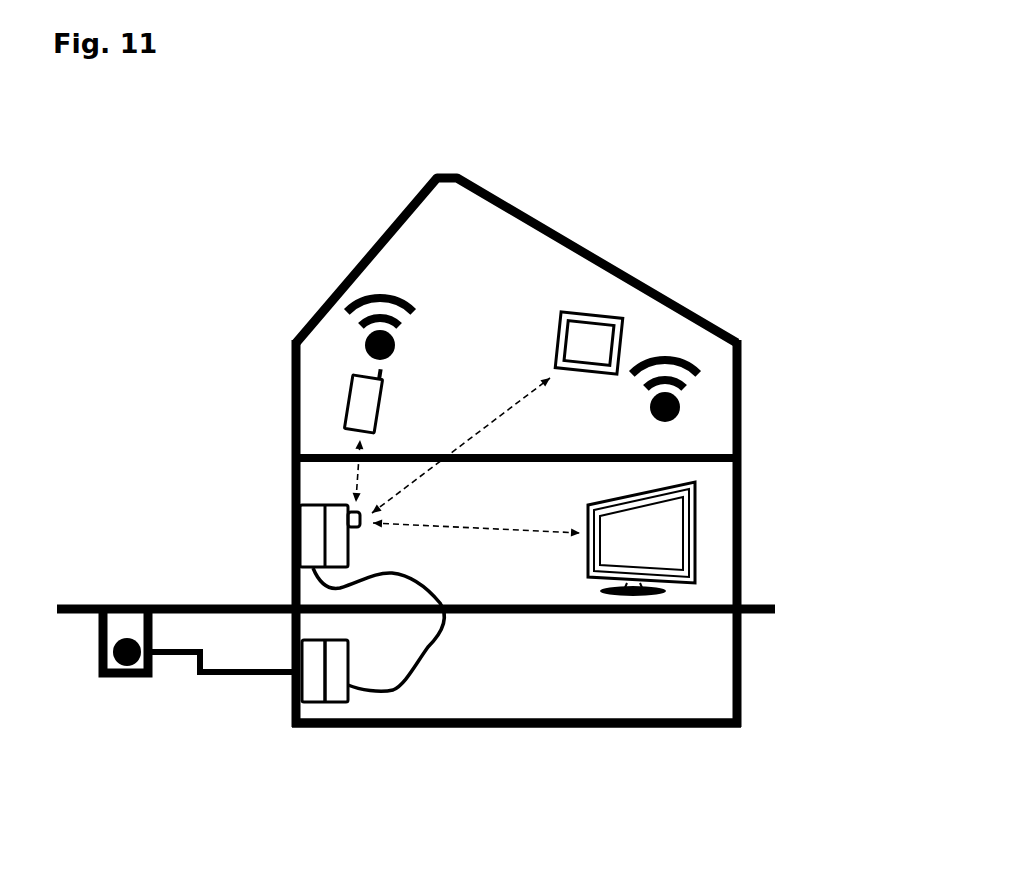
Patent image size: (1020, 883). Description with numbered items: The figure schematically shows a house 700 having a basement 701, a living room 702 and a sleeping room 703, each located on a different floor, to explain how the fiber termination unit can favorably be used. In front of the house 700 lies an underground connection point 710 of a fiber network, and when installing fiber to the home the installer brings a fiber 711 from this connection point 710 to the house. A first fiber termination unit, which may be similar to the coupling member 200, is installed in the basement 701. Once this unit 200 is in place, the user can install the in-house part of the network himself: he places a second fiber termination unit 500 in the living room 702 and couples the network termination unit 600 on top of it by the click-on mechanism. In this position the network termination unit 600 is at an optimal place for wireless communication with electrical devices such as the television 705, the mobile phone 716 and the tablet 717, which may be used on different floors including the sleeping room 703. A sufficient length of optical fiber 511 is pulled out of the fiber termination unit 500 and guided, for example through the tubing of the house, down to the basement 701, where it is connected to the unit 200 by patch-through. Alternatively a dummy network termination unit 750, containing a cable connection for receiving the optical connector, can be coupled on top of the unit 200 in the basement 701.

The house 700 is at (632, 200).
The basement 701 is at (510, 710).
The living room 702 is at (510, 590).
The sleeping room 703 is at (510, 372).
The television 705 is at (587, 557).
The connection point 710 is at (127, 638).
The fiber 711 is at (235, 675).
The mobile phone 716 is at (364, 402).
The tablet 717 is at (556, 345).
The fiber termination unit 500 is at (313, 535).
The network termination unit 600 is at (333, 538).
The optical fiber 511 is at (428, 647).
The coupling member 200 is at (313, 687).
The dummy network termination unit 750 is at (333, 687).